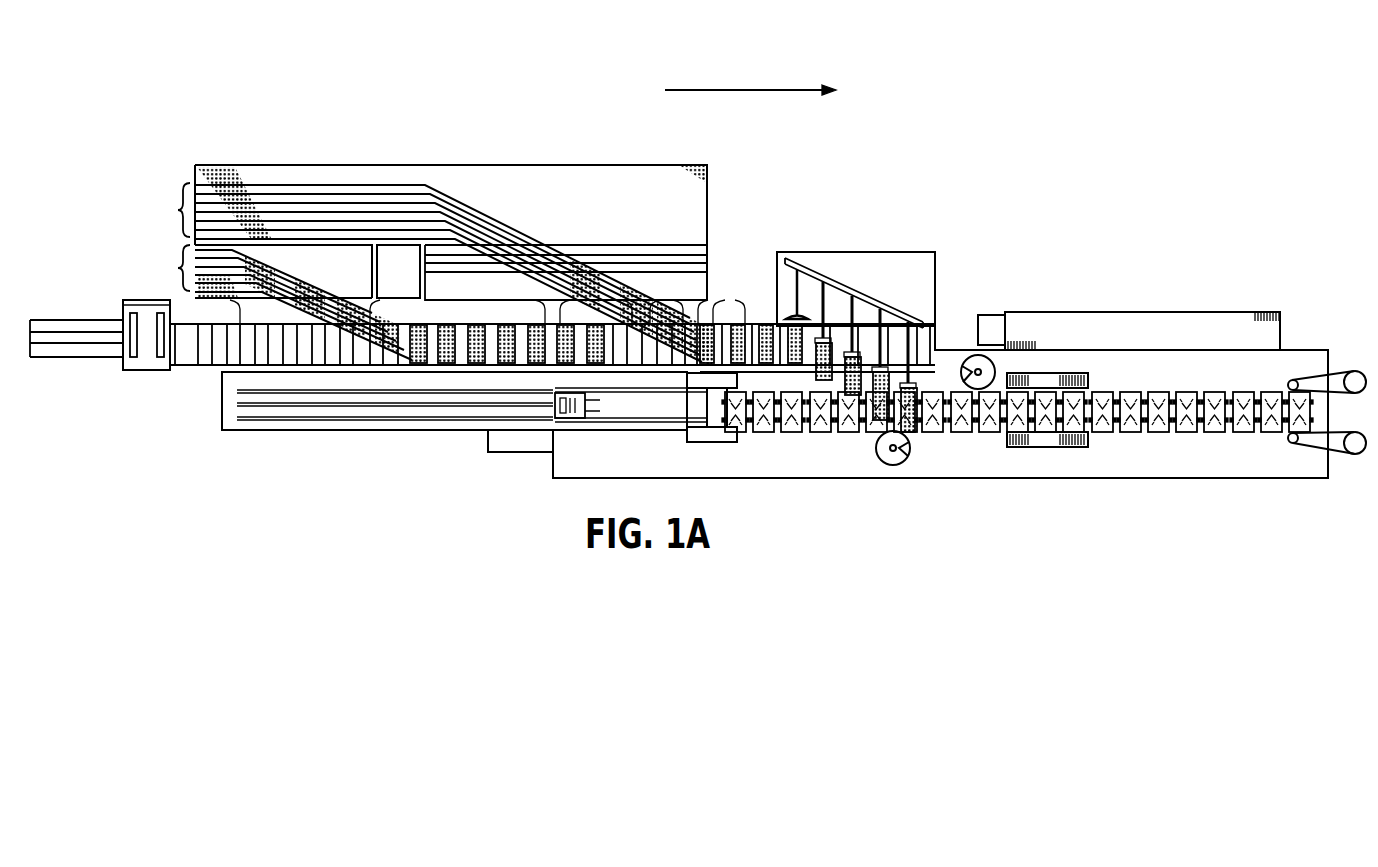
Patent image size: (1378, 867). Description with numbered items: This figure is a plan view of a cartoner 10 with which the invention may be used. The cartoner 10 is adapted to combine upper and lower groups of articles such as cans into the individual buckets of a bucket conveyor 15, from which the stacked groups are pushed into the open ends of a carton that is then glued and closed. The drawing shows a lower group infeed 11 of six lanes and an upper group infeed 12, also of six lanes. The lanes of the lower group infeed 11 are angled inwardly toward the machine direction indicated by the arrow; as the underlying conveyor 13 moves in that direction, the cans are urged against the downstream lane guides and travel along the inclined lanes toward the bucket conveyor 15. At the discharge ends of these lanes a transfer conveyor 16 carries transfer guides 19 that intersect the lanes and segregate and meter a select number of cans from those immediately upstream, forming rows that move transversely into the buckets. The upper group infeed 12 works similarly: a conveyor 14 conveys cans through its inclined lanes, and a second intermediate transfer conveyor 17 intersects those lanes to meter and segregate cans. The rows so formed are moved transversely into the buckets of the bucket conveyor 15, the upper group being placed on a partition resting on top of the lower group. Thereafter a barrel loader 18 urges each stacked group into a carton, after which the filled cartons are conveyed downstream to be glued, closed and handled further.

The cartoner 10 is at (371, 77).
The lower group infeed 11 is at (181, 268).
The upper group infeed 12 is at (181, 210).
The conveyor 13 is at (348, 281).
The conveyor 14 is at (382, 174).
The bucket conveyor 15 is at (207, 350).
The transfer conveyor 16 is at (213, 311).
The second intermediate transfer conveyor 17 is at (538, 314).
The barrel loader 18 is at (861, 247).
The transfer guides 19 is at (408, 314).